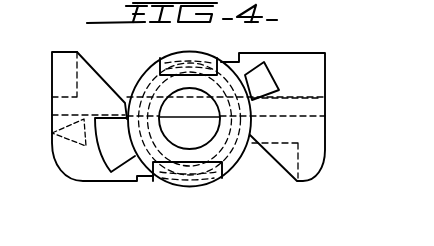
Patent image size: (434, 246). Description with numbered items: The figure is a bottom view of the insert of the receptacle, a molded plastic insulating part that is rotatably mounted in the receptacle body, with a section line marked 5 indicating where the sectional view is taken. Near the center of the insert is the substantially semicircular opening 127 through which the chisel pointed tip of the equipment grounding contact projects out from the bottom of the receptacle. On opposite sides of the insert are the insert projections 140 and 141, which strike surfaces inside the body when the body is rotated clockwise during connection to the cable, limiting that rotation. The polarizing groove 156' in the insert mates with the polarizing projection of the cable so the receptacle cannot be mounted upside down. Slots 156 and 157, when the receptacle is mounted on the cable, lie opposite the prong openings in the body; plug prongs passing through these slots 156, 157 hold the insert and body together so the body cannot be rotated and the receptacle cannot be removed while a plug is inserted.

The section line 5- 5 is at (83, 167).
The substantially semicircular opening 127 is at (195, 138).
The insert projection 140 is at (112, 170).
The insert projection 141 is at (256, 81).
The slot 156 is at (217, 187).
The polarizing groove 156' is at (325, 108).
The slot 157 is at (182, 75).